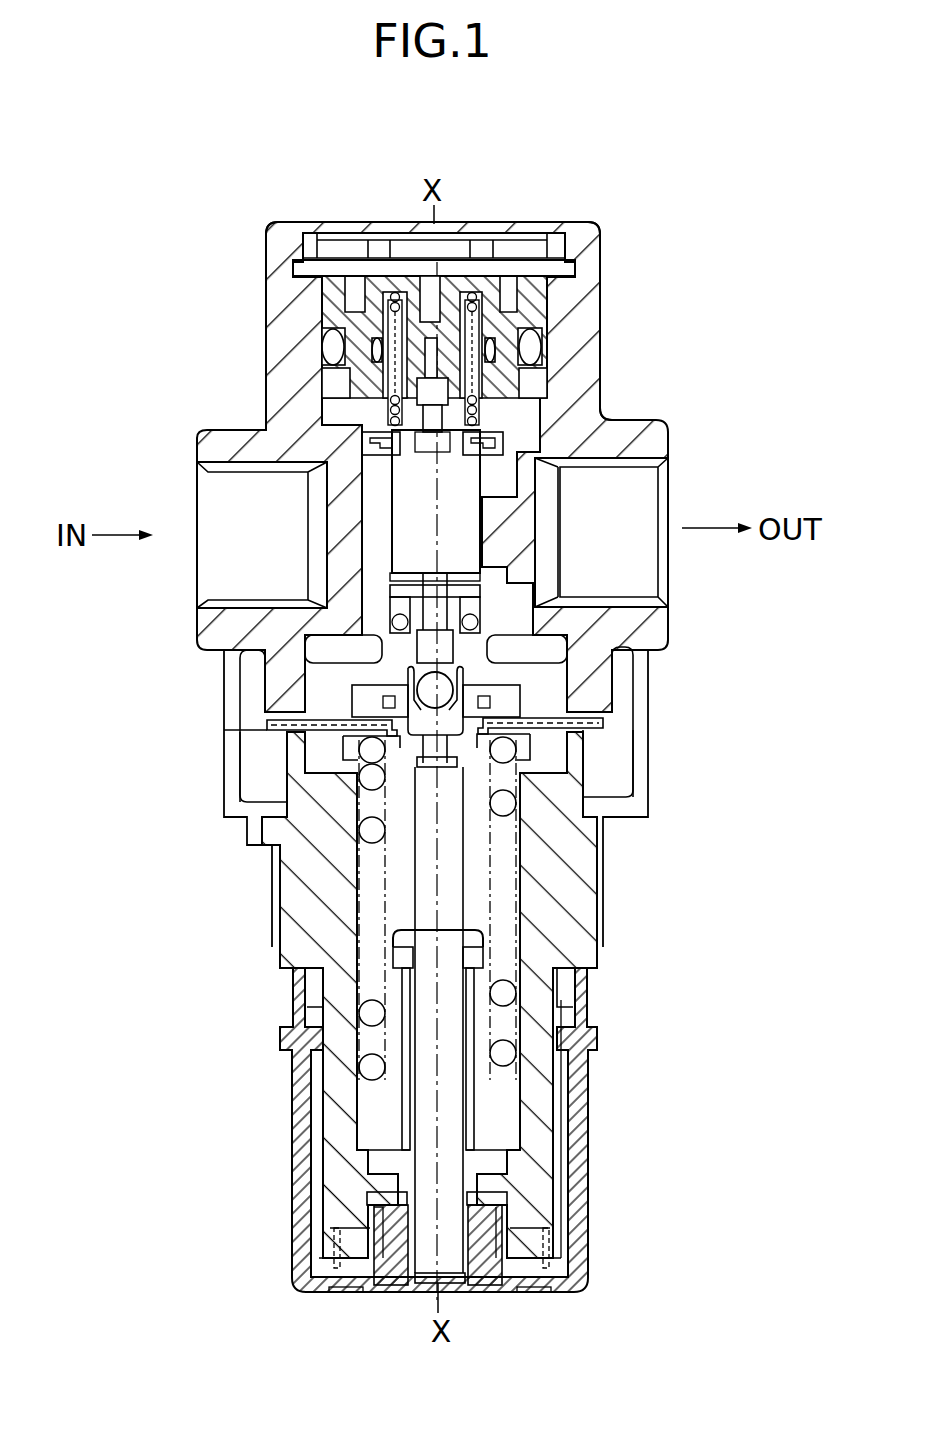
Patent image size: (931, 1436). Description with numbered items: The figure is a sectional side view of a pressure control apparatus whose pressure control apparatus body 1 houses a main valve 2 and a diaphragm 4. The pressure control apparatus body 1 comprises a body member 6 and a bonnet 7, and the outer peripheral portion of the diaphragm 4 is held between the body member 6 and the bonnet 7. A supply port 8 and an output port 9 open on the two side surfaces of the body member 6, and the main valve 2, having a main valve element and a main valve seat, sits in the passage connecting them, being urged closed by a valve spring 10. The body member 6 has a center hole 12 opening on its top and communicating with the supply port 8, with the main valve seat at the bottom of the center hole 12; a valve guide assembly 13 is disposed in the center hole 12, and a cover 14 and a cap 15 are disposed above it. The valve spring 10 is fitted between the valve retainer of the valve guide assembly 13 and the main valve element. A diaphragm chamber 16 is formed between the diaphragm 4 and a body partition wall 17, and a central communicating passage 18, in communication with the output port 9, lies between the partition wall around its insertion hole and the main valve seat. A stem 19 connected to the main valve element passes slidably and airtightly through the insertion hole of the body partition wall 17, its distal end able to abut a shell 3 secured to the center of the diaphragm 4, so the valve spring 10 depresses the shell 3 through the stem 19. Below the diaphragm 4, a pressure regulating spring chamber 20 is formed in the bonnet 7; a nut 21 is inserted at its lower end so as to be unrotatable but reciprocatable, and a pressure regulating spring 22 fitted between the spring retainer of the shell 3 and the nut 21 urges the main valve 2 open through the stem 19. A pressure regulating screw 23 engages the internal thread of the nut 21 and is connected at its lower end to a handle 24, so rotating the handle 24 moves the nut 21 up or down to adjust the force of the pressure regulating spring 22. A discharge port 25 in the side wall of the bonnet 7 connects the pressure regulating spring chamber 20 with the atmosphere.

The pressure control apparatus body 1 is at (279, 212).
The main valve 2 is at (540, 400).
The shell 3 is at (532, 688).
The diaphragm 4 is at (550, 730).
The body member 6 is at (226, 440).
The bonnet 7 is at (307, 860).
The supply port 8 is at (230, 570).
The output port 9 is at (650, 568).
The valve spring 10 is at (385, 296).
The center hole 12 is at (518, 429).
The valve guide assembly 13 is at (545, 290).
The cover 14 is at (300, 266).
The cap 15 is at (522, 232).
The diaphragm chamber 16 is at (325, 682).
The body partition wall 17 is at (517, 600).
The central communicating passage 18 is at (400, 497).
The stem 19 is at (400, 607).
The pressure regulating spring chamber 20 is at (405, 885).
The nut 21 is at (505, 1130).
The pressure regulating spring 22 is at (517, 810).
The pressure regulating screw 23 is at (407, 1183).
The handle 24 is at (303, 1242).
The discharge port 25 is at (584, 898).